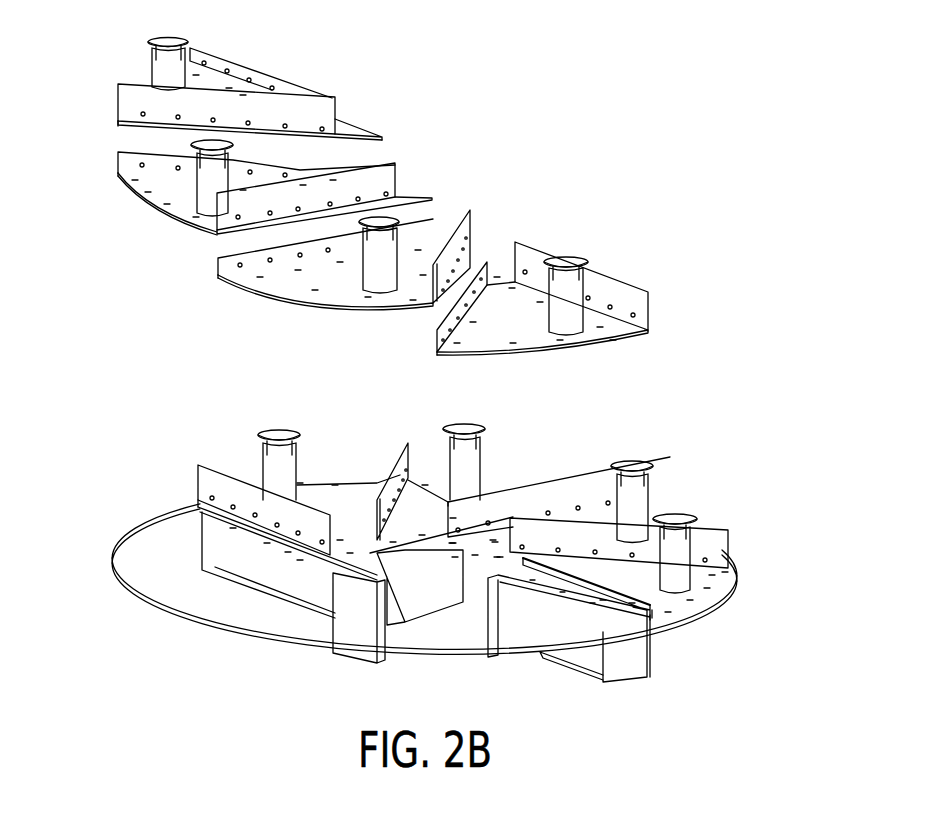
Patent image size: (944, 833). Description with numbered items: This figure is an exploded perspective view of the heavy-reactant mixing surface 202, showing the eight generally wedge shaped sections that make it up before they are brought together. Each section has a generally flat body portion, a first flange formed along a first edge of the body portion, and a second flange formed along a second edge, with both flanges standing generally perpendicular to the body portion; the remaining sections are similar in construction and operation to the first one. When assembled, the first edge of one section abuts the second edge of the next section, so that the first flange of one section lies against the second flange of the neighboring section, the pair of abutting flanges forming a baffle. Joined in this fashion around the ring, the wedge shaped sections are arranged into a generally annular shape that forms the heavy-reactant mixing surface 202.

The heavy-reactant mixing surface 202 is at (578, 130).